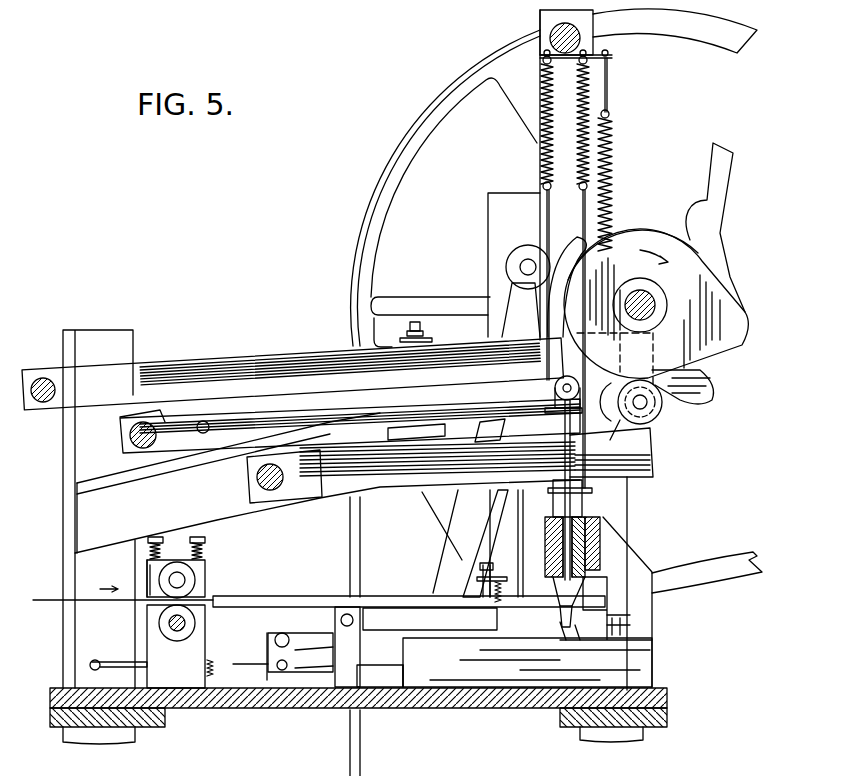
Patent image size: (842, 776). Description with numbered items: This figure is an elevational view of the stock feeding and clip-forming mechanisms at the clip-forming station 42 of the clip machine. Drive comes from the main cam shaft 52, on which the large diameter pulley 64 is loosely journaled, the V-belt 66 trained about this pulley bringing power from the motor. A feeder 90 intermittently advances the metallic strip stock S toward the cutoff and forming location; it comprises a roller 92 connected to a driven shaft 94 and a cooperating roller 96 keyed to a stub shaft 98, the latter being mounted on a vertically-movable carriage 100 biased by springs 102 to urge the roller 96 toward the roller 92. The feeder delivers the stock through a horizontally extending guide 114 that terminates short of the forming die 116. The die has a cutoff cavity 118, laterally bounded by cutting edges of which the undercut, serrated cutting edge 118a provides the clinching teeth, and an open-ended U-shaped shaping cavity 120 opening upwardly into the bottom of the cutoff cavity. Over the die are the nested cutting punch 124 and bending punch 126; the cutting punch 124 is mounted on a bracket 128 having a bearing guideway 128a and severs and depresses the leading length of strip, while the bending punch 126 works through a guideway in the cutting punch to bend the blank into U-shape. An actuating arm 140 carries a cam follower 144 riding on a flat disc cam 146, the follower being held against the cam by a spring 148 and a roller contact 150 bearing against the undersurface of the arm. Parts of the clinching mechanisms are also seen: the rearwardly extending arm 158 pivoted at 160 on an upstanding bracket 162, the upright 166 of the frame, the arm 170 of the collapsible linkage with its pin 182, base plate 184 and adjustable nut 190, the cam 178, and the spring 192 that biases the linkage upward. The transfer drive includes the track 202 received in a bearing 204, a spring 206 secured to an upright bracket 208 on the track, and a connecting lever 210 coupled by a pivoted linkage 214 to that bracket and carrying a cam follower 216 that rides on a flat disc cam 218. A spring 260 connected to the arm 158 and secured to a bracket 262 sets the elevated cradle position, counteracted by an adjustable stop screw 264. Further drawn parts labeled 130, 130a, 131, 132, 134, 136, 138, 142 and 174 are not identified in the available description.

The clip-forming station 42 is at (548, 640).
The main cam shaft 52 is at (652, 292).
The large diameter pulley 64 is at (383, 186).
The V-belt 66 is at (388, 162).
The feeder 90 is at (226, 581).
The roller 92 is at (190, 622).
The driven shaft 94 is at (186, 627).
The cooperating roller 96 is at (192, 578).
The stub shaft 98 is at (170, 580).
The vertically-movable carriage 100 is at (150, 565).
The springs 102 is at (196, 537).
The guide 114 is at (312, 596).
The forming die 116 is at (606, 636).
The cutoff cavity 118 is at (585, 636).
The cutting edge 118a is at (569, 631).
The shaping cavity 120 is at (575, 623).
The cutting punch 124 is at (585, 505).
The bending punch 126 is at (596, 545).
The bracket 128 is at (652, 566).
The bearing guideway 128a is at (596, 562).
The main lever 130 is at (402, 490).
The lever end block 130a is at (598, 438).
The lever pivot block 131 is at (284, 480).
The cam follower roller 132 is at (613, 402).
The cam arm 134 is at (718, 397).
The return spring 136 is at (598, 95).
The follower roller 138 is at (612, 434).
The actuating arm 140 is at (255, 356).
The upper lever pivot 142 is at (43, 404).
The cam follower 144 is at (655, 420).
The flat disc cam 146 is at (740, 351).
The spring 148 is at (540, 148).
The roller contact 150 is at (556, 392).
The rearwardly extending arm 158 is at (386, 618).
The pivot 160 is at (352, 616).
The upstanding bracket 162 is at (342, 660).
The upright 166 is at (628, 515).
The arm 170 is at (246, 434).
The lever pivot 174 is at (128, 440).
The cam 178 is at (738, 312).
The pin 182 is at (203, 434).
The base plate 184 is at (432, 428).
The adjustable nut 190 is at (421, 330).
The spring 192 is at (615, 165).
The track 202 is at (353, 683).
The bearing 204 is at (405, 684).
The spring 206 is at (210, 668).
The upright bracket 208 is at (272, 632).
The connecting lever 210 is at (460, 543).
The pivoted linkage 214 is at (306, 636).
The cam follower 216 is at (507, 263).
The flat disc cam 218 is at (572, 248).
The spring 260 is at (508, 586).
The bracket 262 is at (485, 590).
The adjustable stop screw 264 is at (492, 569).
The strip stock S is at (38, 602).